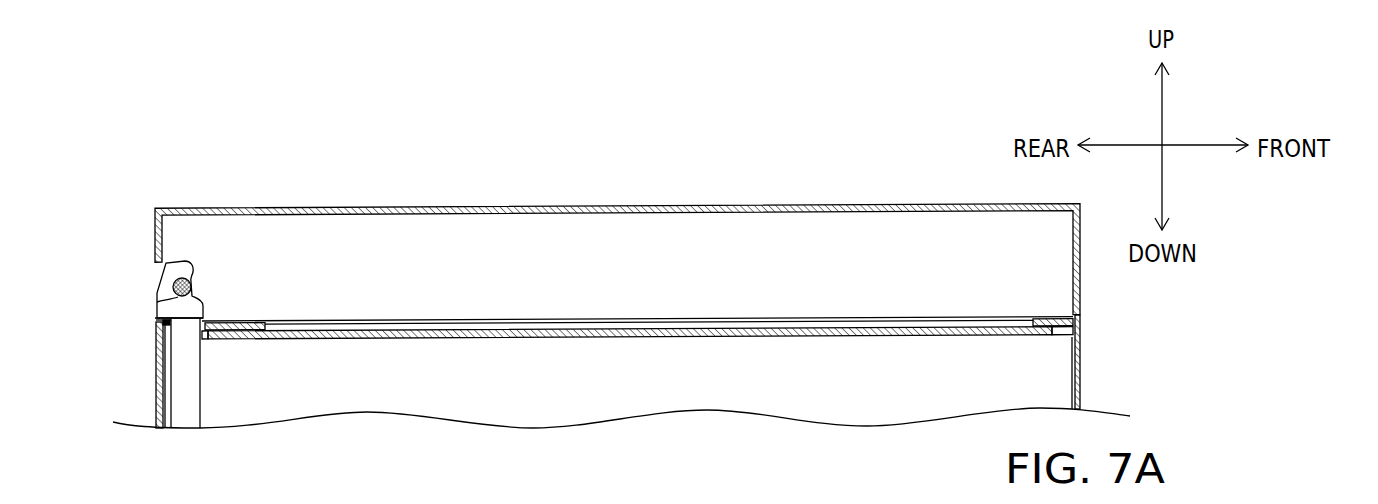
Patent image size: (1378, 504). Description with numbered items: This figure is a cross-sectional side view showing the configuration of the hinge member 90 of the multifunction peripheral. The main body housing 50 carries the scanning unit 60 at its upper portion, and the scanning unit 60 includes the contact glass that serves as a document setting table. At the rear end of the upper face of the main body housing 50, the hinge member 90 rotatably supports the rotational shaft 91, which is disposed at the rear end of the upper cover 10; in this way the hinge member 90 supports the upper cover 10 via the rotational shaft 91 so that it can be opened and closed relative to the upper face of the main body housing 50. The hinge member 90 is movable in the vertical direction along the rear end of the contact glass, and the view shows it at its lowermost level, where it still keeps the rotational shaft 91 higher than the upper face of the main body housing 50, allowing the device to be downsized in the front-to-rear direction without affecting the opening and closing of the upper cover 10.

The upper cover 10 is at (1081, 268).
The main body housing 50 is at (682, 358).
The scanning unit 60 is at (1050, 373).
The hinge member 90 is at (181, 367).
The rotational shaft 91 is at (157, 302).